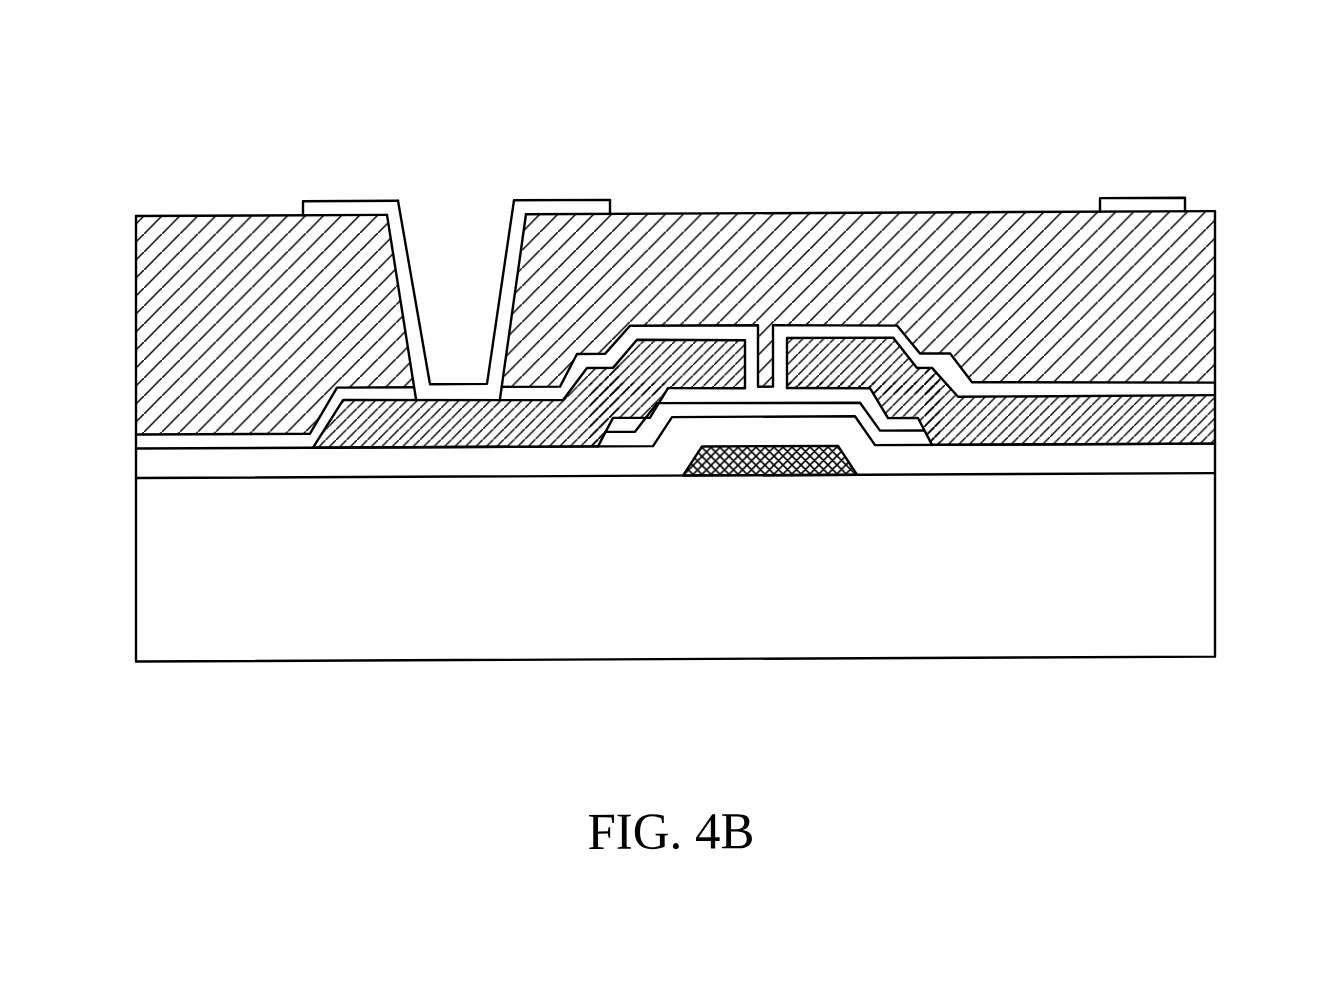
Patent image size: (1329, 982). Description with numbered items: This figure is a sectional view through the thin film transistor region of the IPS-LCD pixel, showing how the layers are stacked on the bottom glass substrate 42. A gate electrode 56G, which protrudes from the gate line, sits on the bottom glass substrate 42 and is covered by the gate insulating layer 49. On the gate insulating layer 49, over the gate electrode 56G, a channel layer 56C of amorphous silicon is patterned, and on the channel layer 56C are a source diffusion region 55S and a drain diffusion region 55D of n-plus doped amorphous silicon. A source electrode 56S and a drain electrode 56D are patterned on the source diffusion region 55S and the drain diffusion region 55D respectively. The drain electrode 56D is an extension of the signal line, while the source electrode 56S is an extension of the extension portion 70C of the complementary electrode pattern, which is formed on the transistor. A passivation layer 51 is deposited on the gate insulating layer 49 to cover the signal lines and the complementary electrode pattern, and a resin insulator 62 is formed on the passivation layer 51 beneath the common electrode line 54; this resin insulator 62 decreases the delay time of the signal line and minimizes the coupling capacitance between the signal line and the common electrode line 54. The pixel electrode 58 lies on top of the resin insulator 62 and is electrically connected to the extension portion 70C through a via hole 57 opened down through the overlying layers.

The bottom glass substrate 42 is at (1185, 571).
The gate insulating layer 49 is at (1185, 462).
The passivation layer 51 is at (1185, 394).
The common electrode line 54 is at (1140, 207).
The source diffusion region 55S is at (632, 425).
The drain diffusion region 55D is at (900, 424).
The gate electrode 56G is at (735, 470).
The channel layer 56C is at (767, 410).
The source electrode 56S is at (681, 344).
The drain electrode 56D is at (856, 344).
The via hole 57 is at (451, 240).
The pixel electrode 58 is at (346, 203).
The resin insulator 62 is at (1185, 300).
The extension portion 70C is at (383, 428).